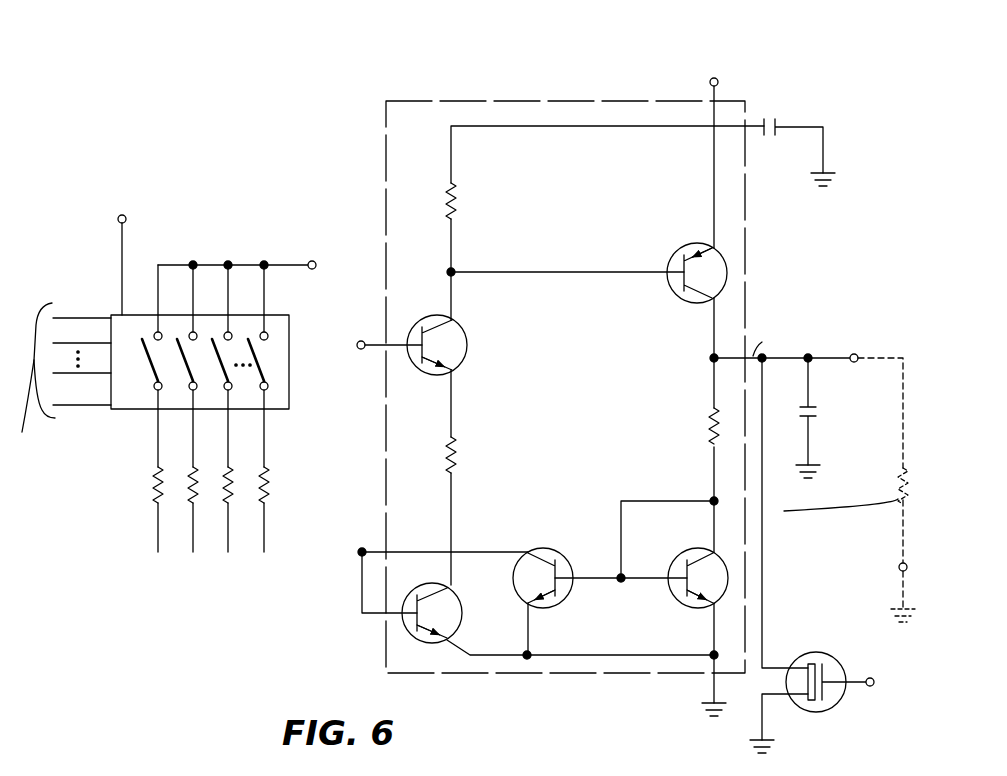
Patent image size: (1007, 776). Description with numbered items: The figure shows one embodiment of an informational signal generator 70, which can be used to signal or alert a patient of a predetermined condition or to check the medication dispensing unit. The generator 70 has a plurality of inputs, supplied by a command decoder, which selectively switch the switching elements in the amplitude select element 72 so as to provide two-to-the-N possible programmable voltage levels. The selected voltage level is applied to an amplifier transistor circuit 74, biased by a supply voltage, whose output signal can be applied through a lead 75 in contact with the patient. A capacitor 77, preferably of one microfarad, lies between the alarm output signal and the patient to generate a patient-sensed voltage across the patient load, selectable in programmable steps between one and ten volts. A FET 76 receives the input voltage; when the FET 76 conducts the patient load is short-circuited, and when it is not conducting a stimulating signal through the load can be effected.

The informational signal generator 70 is at (289, 654).
The amplitude select element 72 is at (289, 378).
The amplifier transistor circuit 74 is at (549, 99).
The lead 75 is at (897, 424).
The FET 76 is at (819, 652).
The capacitor 77 is at (899, 406).